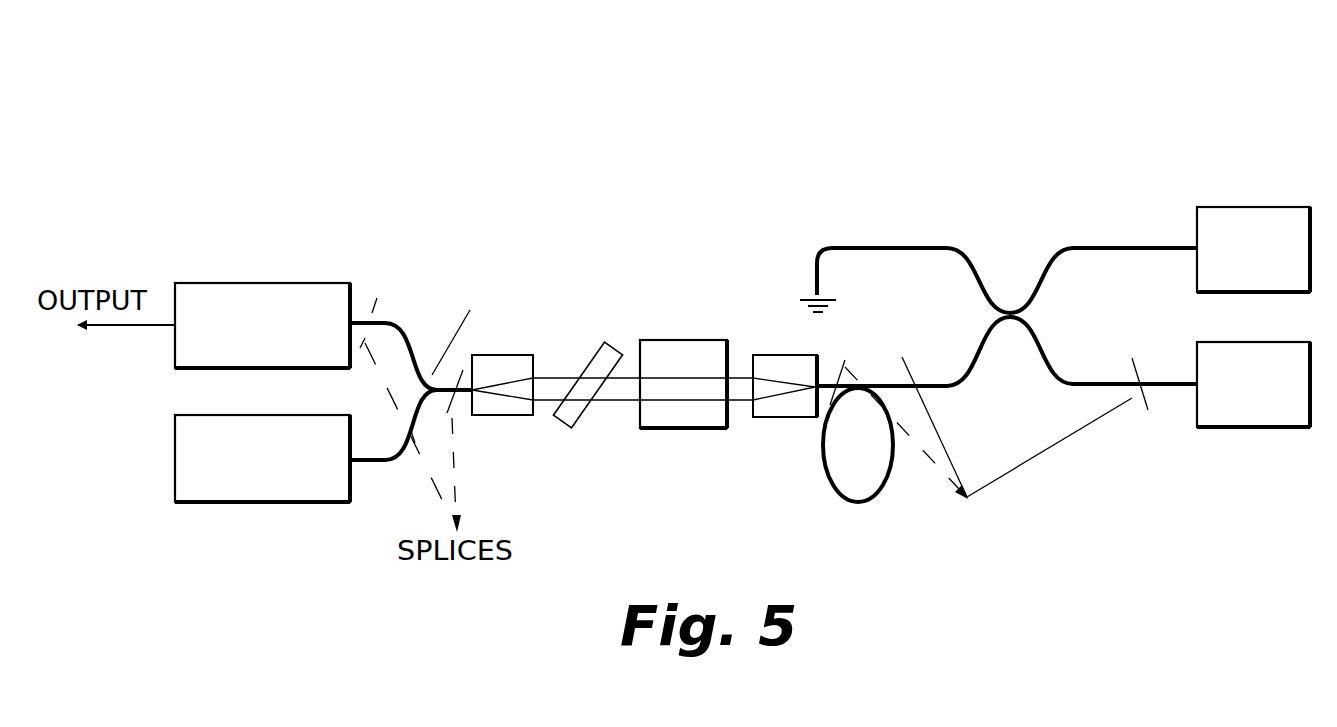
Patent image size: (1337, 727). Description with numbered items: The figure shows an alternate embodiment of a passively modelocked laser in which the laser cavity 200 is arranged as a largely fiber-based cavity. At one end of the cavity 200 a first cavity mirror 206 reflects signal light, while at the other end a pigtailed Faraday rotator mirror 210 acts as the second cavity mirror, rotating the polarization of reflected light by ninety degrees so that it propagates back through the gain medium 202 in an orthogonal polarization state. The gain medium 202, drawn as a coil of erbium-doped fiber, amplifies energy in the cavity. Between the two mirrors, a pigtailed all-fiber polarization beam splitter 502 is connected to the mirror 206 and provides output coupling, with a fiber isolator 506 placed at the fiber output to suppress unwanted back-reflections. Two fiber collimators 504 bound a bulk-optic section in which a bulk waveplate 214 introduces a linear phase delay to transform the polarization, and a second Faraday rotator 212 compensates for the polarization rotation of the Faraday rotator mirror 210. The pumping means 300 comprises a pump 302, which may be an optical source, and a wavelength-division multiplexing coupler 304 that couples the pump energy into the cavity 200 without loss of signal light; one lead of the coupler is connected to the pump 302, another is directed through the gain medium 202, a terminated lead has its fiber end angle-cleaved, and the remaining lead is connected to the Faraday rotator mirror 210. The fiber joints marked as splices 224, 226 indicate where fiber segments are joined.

The fiber isolator 506 is at (245, 284).
The first cavity mirror 206 is at (245, 416).
The all-fiber polarizer or polarization beam splitter 502 is at (475, 273).
The bulk waveplate 214 is at (575, 430).
The second Faraday rotator 212 is at (705, 430).
The fiber collimator 504 is at (773, 354).
The gain medium 202 is at (853, 502).
The splice 224 is at (902, 357).
The splice 226 is at (1145, 417).
The Faraday rotator mirror 210 is at (1258, 428).
The pump 302 is at (1253, 207).
The wavelength-division multiplexing coupler 304 is at (1015, 217).
The pumping means 300 is at (1055, 190).
The laser cavity 200 is at (1023, 447).